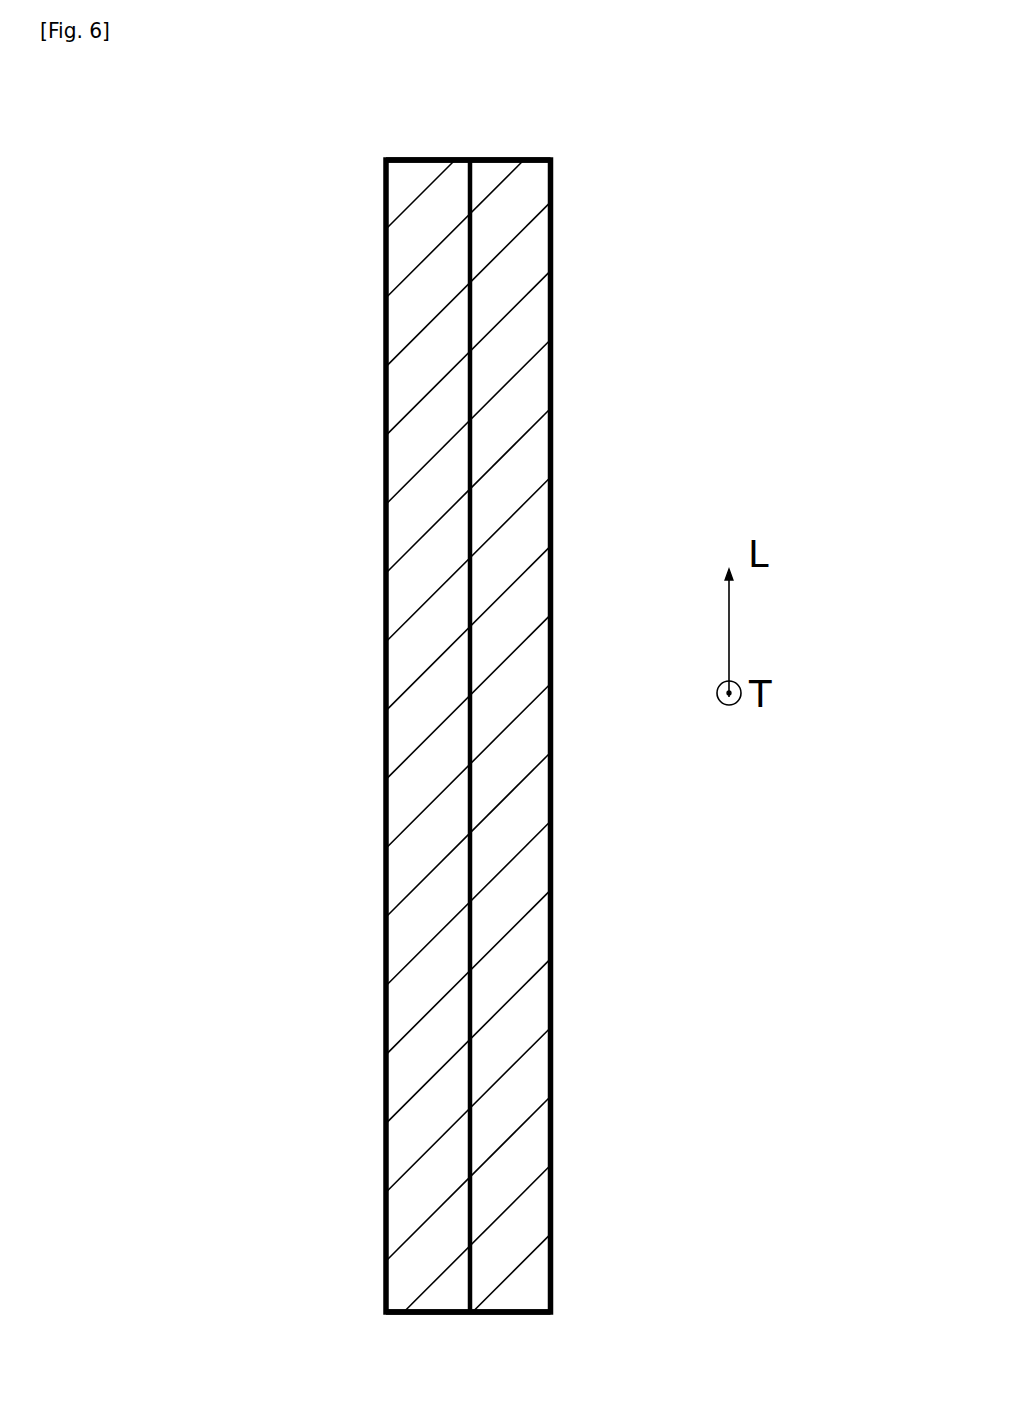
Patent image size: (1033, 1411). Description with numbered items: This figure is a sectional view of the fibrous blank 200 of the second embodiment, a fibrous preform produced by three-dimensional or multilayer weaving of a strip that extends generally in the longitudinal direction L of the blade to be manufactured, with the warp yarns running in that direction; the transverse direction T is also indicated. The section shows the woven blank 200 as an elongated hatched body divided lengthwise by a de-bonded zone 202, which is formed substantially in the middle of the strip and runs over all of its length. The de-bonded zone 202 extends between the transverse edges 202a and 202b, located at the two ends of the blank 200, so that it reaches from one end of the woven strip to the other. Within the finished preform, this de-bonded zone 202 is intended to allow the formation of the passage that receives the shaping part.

The fibrous blank 200 is at (595, 1045).
The de-bonded zone 202 is at (468, 733).
The transverse edge 202a is at (515, 1315).
The transverse edge 202b is at (473, 160).